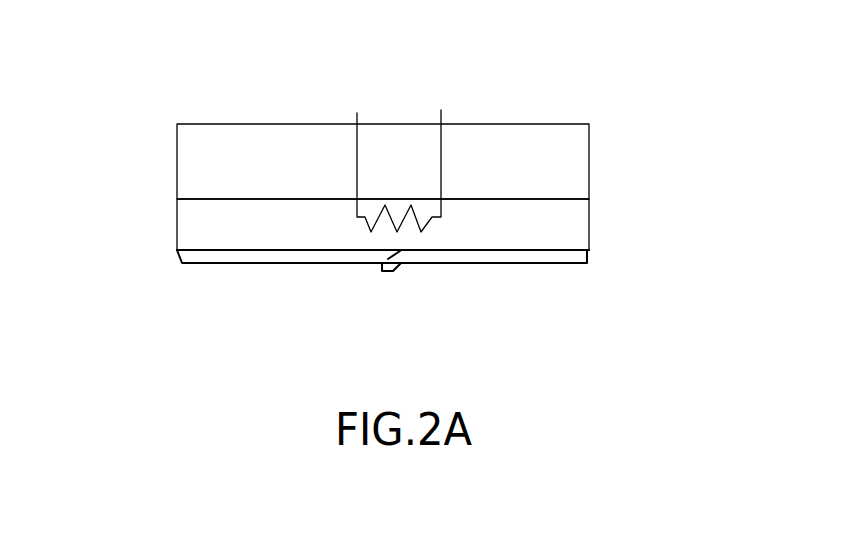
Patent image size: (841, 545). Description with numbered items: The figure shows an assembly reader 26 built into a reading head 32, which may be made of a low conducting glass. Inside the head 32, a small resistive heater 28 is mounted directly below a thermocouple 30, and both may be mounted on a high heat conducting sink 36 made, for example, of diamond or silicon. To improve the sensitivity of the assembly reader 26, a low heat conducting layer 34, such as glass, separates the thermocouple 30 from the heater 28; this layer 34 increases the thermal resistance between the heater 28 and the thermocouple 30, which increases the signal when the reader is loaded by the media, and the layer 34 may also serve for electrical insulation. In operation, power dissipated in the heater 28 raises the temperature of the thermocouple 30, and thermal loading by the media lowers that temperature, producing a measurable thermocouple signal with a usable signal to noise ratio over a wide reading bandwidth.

The assembly reader 26 is at (176, 46).
The resistive heater 28 is at (357, 218).
The thermocouple 30 is at (397, 272).
The reading head 32 is at (590, 138).
The low heat conducting layer 34 is at (590, 222).
The high heat conducting sink 36 is at (193, 174).